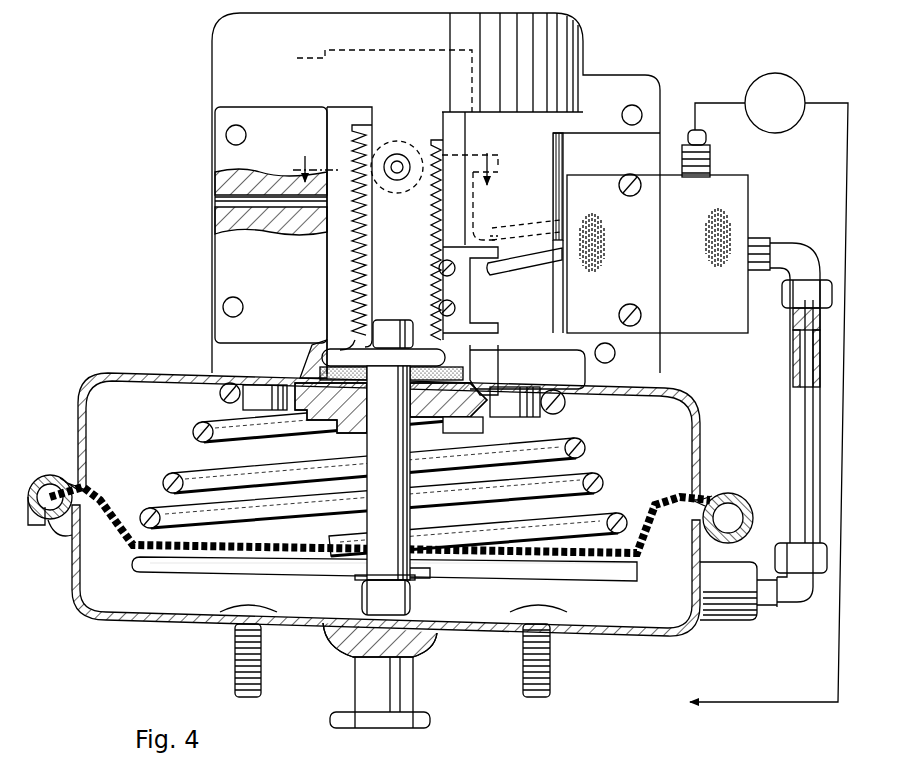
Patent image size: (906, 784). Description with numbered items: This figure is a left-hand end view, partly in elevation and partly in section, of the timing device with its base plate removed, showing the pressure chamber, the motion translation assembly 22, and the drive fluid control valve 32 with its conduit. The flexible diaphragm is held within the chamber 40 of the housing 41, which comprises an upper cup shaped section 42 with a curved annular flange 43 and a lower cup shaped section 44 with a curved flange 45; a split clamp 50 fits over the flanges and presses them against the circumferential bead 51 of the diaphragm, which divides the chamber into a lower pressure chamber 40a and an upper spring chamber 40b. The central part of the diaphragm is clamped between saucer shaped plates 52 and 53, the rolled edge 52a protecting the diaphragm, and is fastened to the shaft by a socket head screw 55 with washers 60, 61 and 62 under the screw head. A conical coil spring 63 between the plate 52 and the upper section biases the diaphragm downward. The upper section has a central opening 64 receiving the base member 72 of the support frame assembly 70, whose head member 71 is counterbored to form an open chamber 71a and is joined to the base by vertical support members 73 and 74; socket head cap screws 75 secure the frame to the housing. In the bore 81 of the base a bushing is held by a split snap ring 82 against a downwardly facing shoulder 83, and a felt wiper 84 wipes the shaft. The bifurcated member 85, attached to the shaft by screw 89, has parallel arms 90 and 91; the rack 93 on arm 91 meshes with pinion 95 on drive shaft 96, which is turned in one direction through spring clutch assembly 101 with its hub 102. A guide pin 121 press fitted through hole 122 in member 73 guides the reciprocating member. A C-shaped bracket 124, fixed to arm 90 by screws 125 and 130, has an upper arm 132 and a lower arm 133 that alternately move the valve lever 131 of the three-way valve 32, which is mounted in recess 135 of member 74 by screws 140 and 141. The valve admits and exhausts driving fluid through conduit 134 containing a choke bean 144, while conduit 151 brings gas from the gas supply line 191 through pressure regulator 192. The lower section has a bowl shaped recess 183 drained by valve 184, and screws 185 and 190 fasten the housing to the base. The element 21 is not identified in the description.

The support frame assembly 70 is at (195, 97).
The head member 71 is at (214, 32).
The open chamber 71a is at (312, 58).
The base member 72 is at (210, 350).
The vertical support member 73 is at (216, 260).
The vertical support member 74 is at (648, 95).
The socket head cap screws 75 is at (252, 378).
The bore 81 is at (438, 375).
The split snap ring 82 is at (483, 425).
The shoulder 83 is at (480, 385).
The wiper 84 is at (383, 350).
The bifurcated member 85 is at (352, 340).
The socket head screw 89 is at (403, 320).
The arm 90 is at (442, 140).
The arm 91 is at (340, 138).
The rack 93 is at (352, 222).
The pinion gear 95 is at (360, 145).
The drive shaft 96 is at (400, 158).
The spring clutch assembly 101 is at (395, 160).
The hub 102 is at (345, 115).
The guide pin 121 is at (220, 193).
The hole 122 is at (225, 215).
The C-shaped bracket 124 is at (488, 162).
The screw 125 is at (437, 283).
The screw 130 is at (457, 306).
The valve lever 131 is at (535, 220).
The upper arm 132 is at (490, 248).
The lower arm 133 is at (500, 333).
The conduit 134 is at (792, 410).
The recess 135 is at (565, 152).
The screw 140 is at (642, 185).
The screw 141 is at (648, 296).
The choke bean 144 is at (795, 318).
The conduit 151 is at (708, 136).
The bowl shaped recess 183 is at (430, 640).
The valve 184 is at (416, 677).
The screw 185 is at (263, 677).
The screw 190 is at (522, 690).
The gas supply line 191 is at (820, 700).
The pressure regulator 192 is at (790, 125).
The housing 21 is at (105, 385).
The motion translation assembly 22 is at (389, 227).
The three-way control valve 32 is at (700, 337).
The chamber 40 is at (160, 423).
The lower pressure chamber 40a is at (192, 590).
The upper spring chamber 40b is at (175, 450).
The housing 41 is at (77, 420).
The upper cup shaped section 42 is at (85, 398).
The curved annular flange 43 is at (58, 480).
The lower cup shaped section 44 is at (84, 600).
The curved annular flange 45 is at (42, 527).
The clamp 50 is at (58, 540).
The circumferential bead 51 is at (740, 495).
The saucer shaped plate 52 is at (300, 545).
The rolled edge 52a is at (138, 547).
The saucer shaped plate 53 is at (300, 566).
The socket head screw 55 is at (362, 598).
The washer 60 is at (405, 583).
The washer 61 is at (432, 578).
The washer 62 is at (440, 570).
The coil spring 63 is at (585, 446).
The central circular opening 64 is at (305, 372).